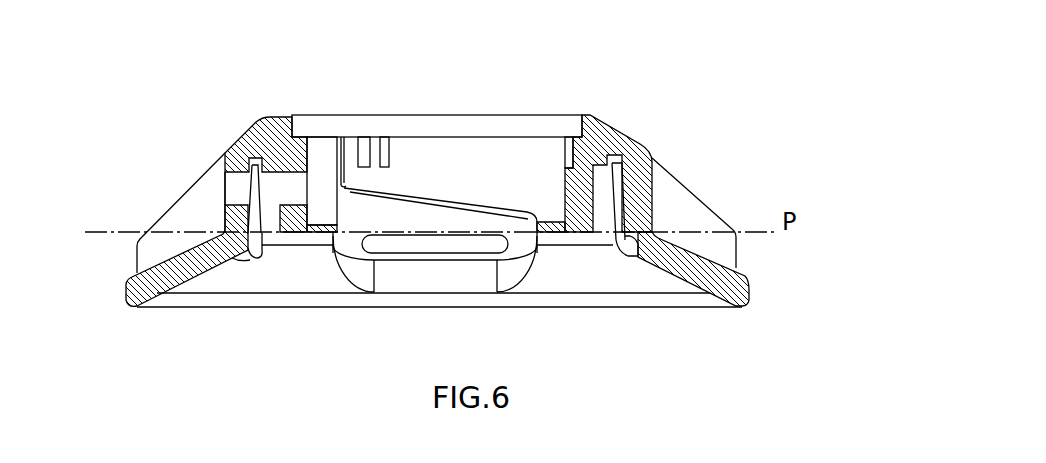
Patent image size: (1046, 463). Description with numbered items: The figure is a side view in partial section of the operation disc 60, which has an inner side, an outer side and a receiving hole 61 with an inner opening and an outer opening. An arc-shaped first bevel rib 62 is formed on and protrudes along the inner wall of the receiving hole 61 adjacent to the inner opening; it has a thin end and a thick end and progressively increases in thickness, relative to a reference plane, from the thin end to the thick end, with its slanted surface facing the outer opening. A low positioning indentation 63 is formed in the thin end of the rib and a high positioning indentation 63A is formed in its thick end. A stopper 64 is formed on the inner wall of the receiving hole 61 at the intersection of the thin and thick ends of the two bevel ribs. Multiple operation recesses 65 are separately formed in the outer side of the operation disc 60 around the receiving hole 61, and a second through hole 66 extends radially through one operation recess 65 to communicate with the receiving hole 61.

The operation disc 60 is at (618, 140).
The receiving hole 61 is at (507, 143).
The first bevel rib 62 is at (388, 208).
The low positioning indentation 63 is at (553, 218).
The high positioning indentation 63A is at (348, 182).
The stopper 64 is at (320, 145).
The operation recess 65 is at (195, 208).
The second through hole 66 is at (242, 180).